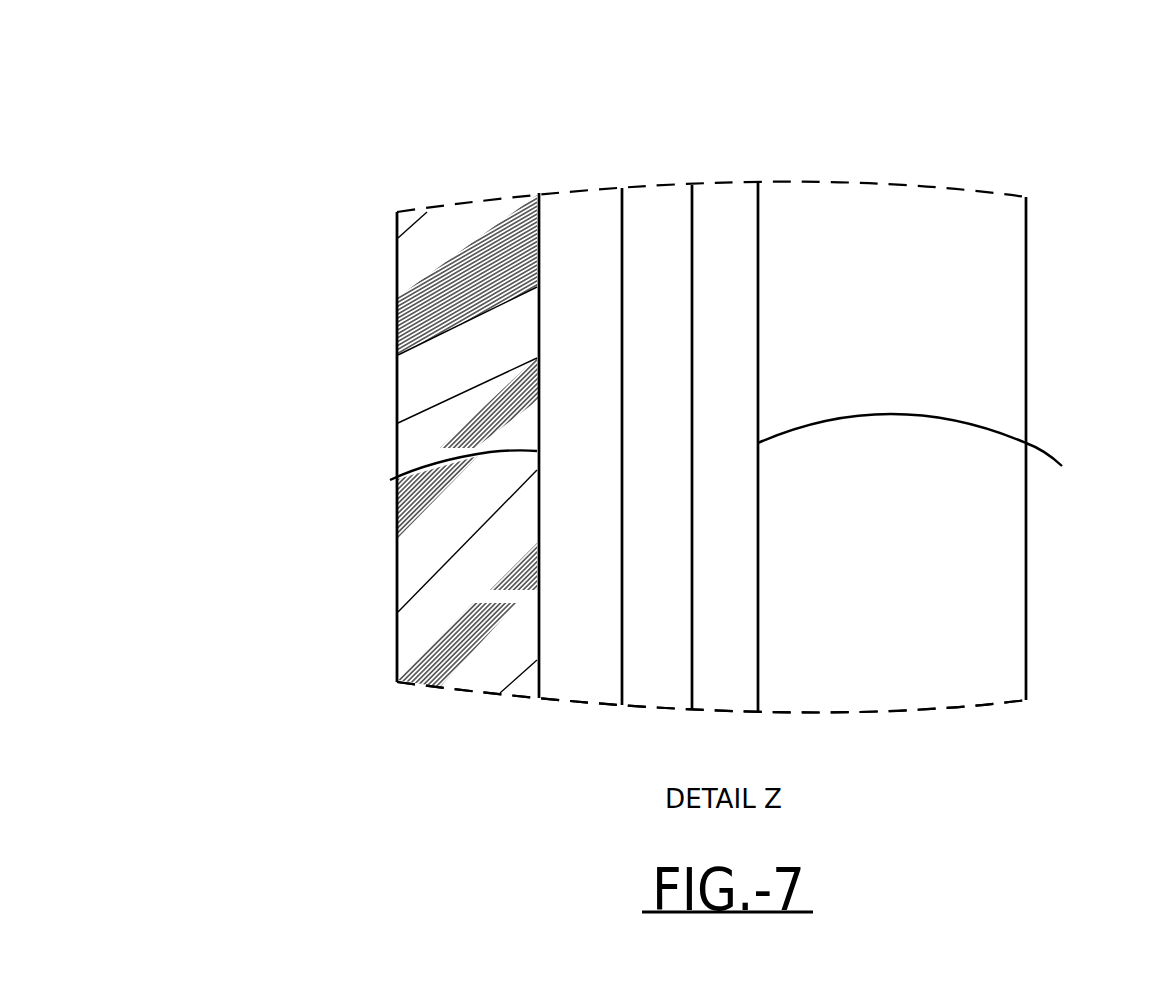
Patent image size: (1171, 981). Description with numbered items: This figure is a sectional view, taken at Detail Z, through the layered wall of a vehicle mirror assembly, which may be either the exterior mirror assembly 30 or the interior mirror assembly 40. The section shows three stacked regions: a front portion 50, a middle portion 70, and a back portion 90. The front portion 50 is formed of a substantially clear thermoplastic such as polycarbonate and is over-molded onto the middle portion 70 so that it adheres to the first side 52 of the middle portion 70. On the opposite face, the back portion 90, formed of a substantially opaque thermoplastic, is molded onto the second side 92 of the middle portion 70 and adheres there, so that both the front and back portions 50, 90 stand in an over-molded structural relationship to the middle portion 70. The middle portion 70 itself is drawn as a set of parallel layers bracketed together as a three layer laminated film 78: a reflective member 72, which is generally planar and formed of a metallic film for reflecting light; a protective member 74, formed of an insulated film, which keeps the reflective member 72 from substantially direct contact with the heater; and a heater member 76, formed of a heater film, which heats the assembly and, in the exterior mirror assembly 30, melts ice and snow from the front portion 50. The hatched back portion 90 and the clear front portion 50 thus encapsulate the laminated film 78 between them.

The exterior mirror assembly 30 is at (604, 376).
The interior mirror assembly 40 is at (330, 137).
The front portion 50 is at (1006, 371).
The first side 52 is at (927, 447).
The middle portion 70 is at (679, 719).
The reflective member 72 is at (734, 505).
The protective member 74 is at (662, 592).
The heater member 76 is at (560, 592).
The three layer laminated film 78 is at (538, 195).
The back portion 90 is at (392, 258).
The second side 92 is at (390, 480).